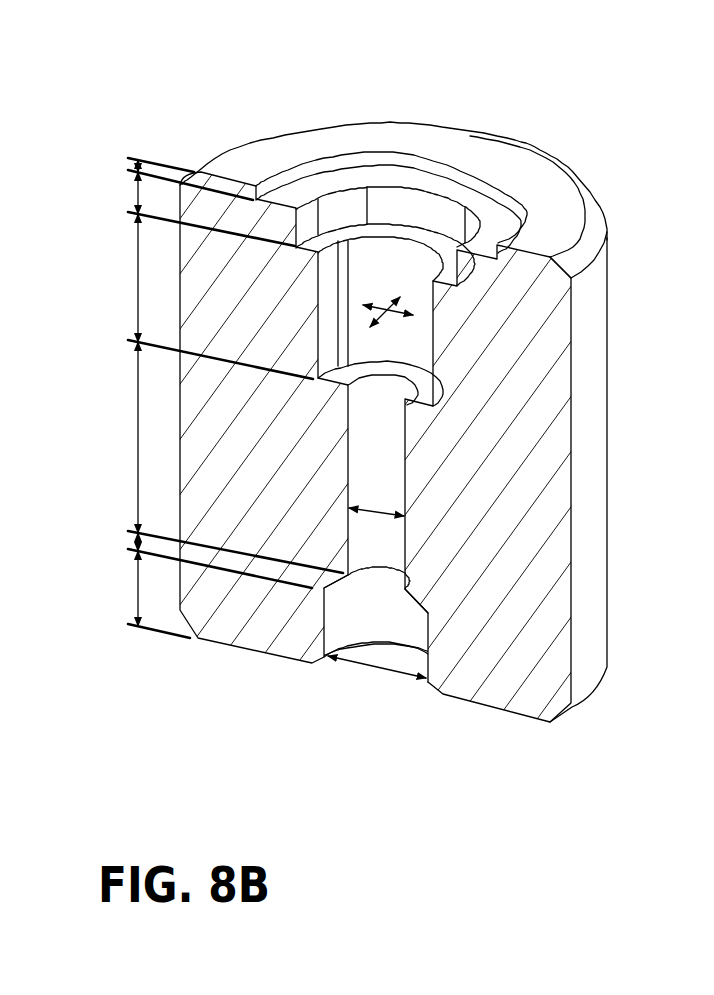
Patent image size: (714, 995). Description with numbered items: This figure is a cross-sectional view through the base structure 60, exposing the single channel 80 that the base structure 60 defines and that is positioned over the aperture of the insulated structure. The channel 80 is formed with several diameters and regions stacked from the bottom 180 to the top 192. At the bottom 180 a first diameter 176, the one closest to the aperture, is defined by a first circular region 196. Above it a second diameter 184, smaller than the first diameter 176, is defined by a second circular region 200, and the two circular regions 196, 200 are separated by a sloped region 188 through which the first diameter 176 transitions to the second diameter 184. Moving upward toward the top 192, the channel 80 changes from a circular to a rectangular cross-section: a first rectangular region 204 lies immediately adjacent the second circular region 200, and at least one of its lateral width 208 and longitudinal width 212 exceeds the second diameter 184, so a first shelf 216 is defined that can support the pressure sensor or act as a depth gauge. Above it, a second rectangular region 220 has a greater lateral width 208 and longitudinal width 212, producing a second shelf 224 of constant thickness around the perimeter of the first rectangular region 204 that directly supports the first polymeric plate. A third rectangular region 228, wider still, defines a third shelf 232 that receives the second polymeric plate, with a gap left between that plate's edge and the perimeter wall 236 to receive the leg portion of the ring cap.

The base structure 60 is at (428, 100).
The channel 80 is at (430, 700).
The first diameter 176 is at (370, 668).
The bottom 180 is at (247, 650).
The second diameter 184 is at (392, 506).
The sloped region 188 is at (130, 540).
The top 192 is at (232, 160).
The first circular region 196 is at (137, 580).
The second circular region 200 is at (137, 452).
The first rectangular region 204 is at (132, 280).
The lateral width 208 is at (380, 323).
The longitudinal width 212 is at (407, 300).
The first shelf 216 is at (348, 380).
The second rectangular region 220 is at (132, 192).
The second shelf 224 is at (402, 225).
The third rectangular region 228 is at (127, 167).
The third shelf 232 is at (540, 210).
The perimeter wall 236 is at (480, 190).